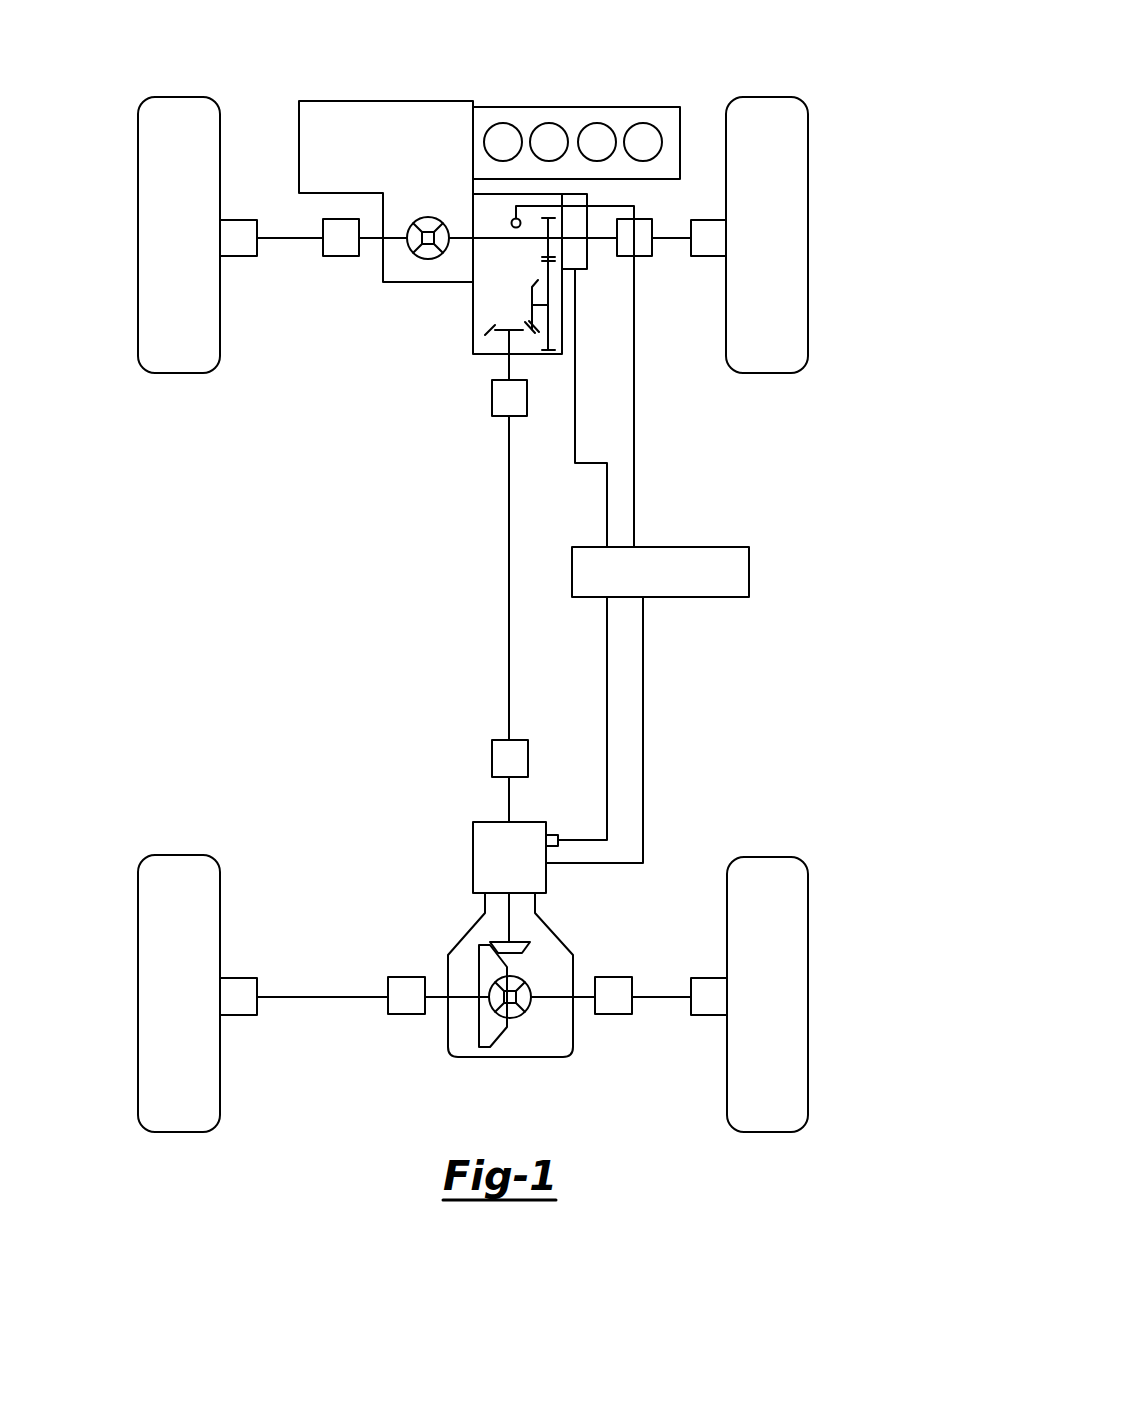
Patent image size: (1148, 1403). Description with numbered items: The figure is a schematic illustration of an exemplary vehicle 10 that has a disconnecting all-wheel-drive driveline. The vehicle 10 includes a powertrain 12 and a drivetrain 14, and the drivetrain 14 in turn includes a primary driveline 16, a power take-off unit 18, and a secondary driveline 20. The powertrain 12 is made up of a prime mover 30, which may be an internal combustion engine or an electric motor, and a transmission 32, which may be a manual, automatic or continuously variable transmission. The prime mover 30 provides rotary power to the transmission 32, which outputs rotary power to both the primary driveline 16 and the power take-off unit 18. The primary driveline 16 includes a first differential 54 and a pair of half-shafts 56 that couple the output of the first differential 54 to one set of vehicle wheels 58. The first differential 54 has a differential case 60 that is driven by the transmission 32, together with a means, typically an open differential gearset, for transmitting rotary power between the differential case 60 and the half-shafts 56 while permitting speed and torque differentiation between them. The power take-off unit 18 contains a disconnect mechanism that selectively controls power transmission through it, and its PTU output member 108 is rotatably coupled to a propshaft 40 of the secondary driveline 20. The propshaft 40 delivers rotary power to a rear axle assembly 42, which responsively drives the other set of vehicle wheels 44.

The vehicle 10 is at (846, 435).
The powertrain 12 is at (574, 82).
The drivetrain 14 is at (551, 648).
The primary driveline 16 is at (484, 255).
The power take-off unit 18 is at (444, 345).
The secondary driveline 20 is at (474, 1009).
The prime mover 30 is at (530, 108).
The transmission 32 is at (387, 102).
The propshaft 40 is at (510, 662).
The rear axle assembly 42 is at (524, 1062).
The vehicle wheels 44 is at (178, 856).
The first differential 54 is at (427, 263).
The half-shafts 56 is at (283, 238).
The vehicle wheels 58 is at (178, 374).
The differential case 60 is at (427, 217).
The PTU output member 108 is at (485, 380).